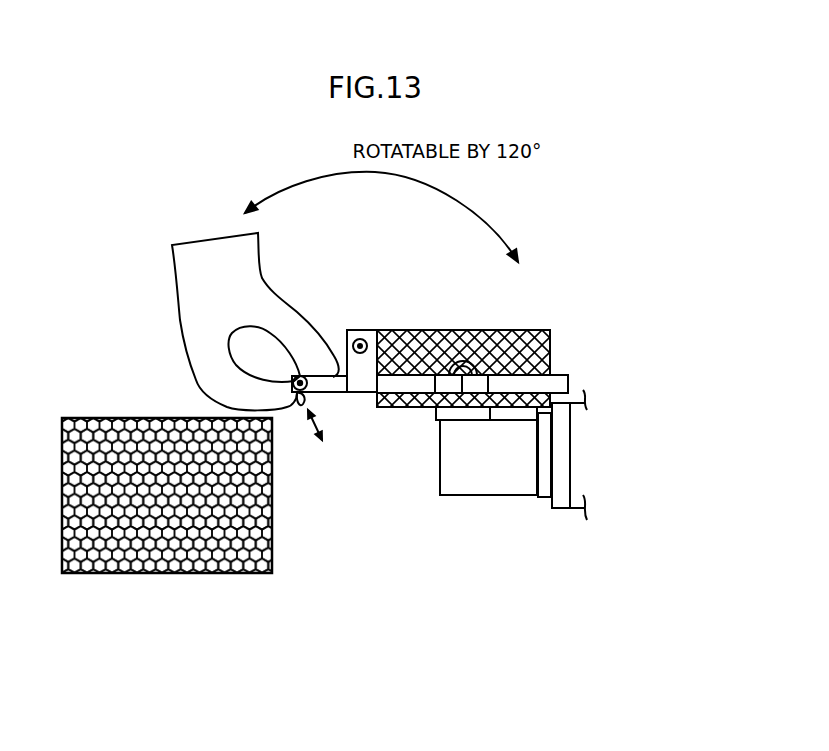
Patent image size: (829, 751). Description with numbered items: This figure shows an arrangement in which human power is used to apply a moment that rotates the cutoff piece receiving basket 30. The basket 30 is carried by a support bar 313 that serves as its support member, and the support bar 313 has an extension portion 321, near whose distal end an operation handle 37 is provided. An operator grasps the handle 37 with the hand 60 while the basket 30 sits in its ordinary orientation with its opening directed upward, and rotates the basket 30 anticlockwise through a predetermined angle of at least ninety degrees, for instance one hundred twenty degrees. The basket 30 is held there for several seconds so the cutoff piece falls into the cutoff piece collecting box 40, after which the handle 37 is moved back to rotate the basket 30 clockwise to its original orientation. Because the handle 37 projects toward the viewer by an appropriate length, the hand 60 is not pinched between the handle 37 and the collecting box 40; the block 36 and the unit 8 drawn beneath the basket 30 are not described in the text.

The human hand 60 is at (218, 247).
The holder block 36 is at (360, 330).
The cutoff piece receiving basket 30 is at (432, 330).
The support bar 313 is at (568, 380).
The extension portion 321 is at (332, 389).
The operation handle 37 is at (300, 398).
The drive unit housing 8 is at (491, 482).
The cutoff piece collecting box 40 is at (165, 560).